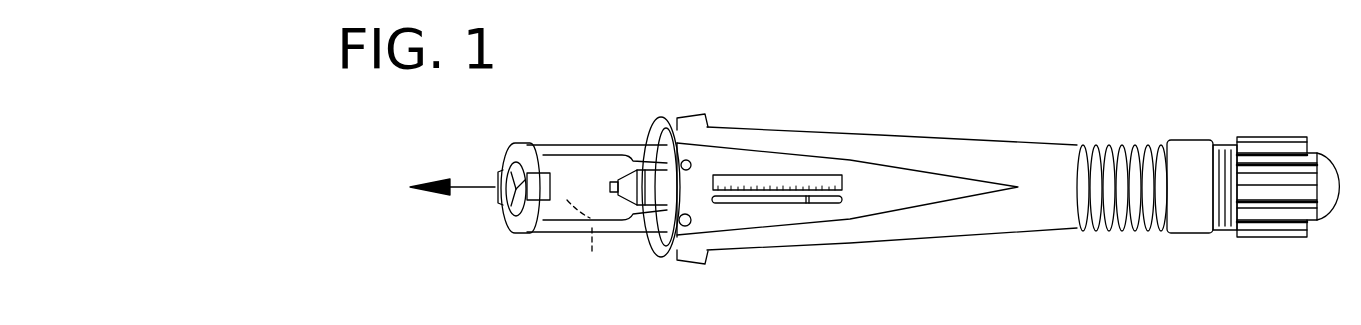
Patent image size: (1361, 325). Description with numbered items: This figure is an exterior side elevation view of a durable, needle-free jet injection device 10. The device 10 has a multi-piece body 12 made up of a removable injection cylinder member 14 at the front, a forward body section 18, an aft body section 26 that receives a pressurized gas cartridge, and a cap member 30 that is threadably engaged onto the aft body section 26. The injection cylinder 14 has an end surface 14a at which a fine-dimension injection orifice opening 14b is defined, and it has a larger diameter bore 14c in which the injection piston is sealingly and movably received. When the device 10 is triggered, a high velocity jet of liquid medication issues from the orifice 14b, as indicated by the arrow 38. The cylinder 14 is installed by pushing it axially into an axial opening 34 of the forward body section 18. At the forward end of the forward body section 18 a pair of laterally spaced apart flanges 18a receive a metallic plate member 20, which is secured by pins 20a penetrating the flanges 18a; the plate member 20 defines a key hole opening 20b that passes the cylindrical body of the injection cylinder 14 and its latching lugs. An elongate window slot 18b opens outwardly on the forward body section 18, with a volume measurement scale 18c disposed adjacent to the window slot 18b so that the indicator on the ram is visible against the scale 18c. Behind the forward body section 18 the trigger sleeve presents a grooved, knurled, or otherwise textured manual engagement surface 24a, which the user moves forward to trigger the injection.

The jet injection device 10 is at (807, 84).
The multi-piece body 12 is at (910, 137).
The injection cylinder member 14 is at (551, 134).
The end surface 14a is at (512, 217).
The injection orifice opening 14b is at (497, 194).
The larger diameter bore 14c is at (592, 243).
The forward body section 18 is at (848, 247).
The flanges 18a is at (683, 204).
The window slot 18b is at (773, 200).
The volume measurement scale 18c is at (808, 174).
The metallic plate member 20 is at (653, 128).
The pins 20a is at (693, 167).
The key hole opening 20b is at (665, 133).
The manual engagement surface 24a is at (1093, 231).
The aft body section 26 is at (1183, 142).
The cap member 30 is at (1283, 140).
The axial opening 34 is at (648, 245).
The arrow 38 is at (472, 183).